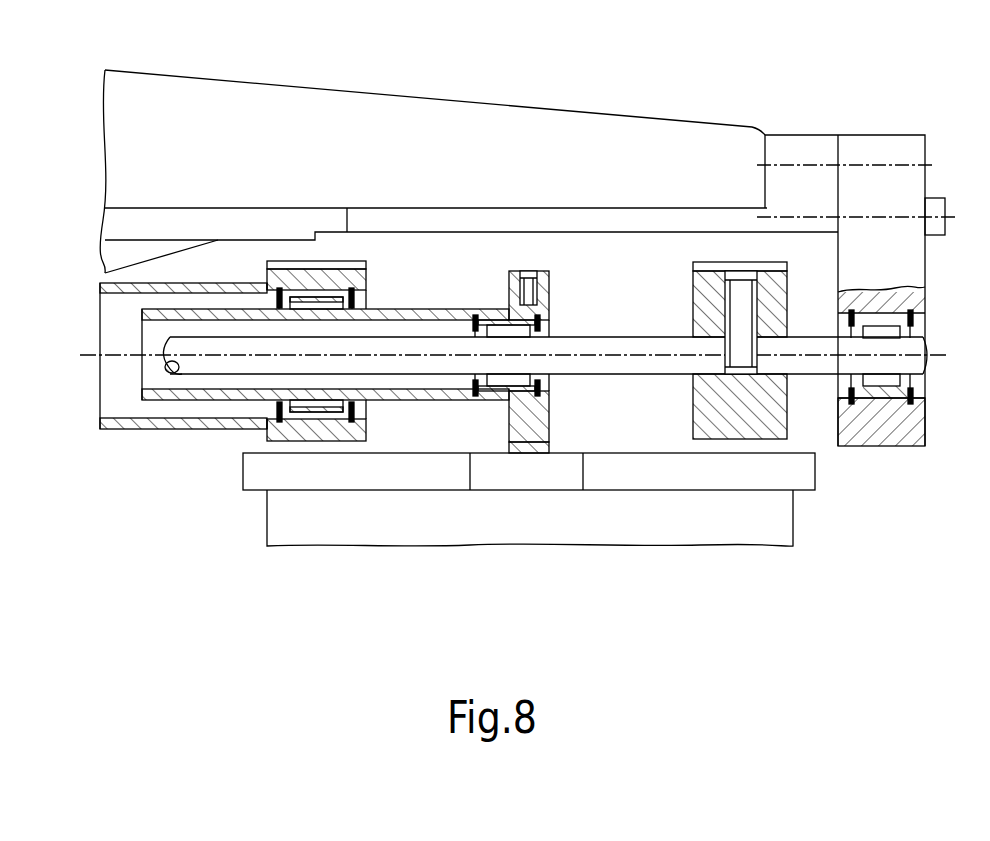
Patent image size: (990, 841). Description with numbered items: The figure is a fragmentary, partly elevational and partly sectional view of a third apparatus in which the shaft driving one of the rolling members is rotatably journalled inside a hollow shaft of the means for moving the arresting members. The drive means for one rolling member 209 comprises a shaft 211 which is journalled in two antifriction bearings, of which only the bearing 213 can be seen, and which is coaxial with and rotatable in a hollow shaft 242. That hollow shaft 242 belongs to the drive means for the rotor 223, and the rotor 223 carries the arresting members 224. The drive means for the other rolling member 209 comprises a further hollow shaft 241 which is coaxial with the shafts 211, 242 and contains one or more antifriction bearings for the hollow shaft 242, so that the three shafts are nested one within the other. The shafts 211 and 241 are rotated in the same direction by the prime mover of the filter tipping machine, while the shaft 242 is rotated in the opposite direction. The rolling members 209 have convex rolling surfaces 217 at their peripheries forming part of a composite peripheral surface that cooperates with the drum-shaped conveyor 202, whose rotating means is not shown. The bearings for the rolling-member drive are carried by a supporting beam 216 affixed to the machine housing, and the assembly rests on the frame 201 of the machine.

The machine frame / base 201 is at (726, 498).
The drum-shaped conveyor 202 is at (380, 527).
The rolling member 209 is at (356, 280).
The shaft 211 is at (187, 345).
The antifriction bearing 213 is at (887, 395).
The supporting beam 216 is at (218, 128).
The convex rolling surface 217 is at (297, 267).
The rotor 223 is at (548, 290).
The arresting member 224 is at (527, 448).
The further hollow shaft 241 is at (203, 422).
The hollow shaft 242 is at (163, 400).